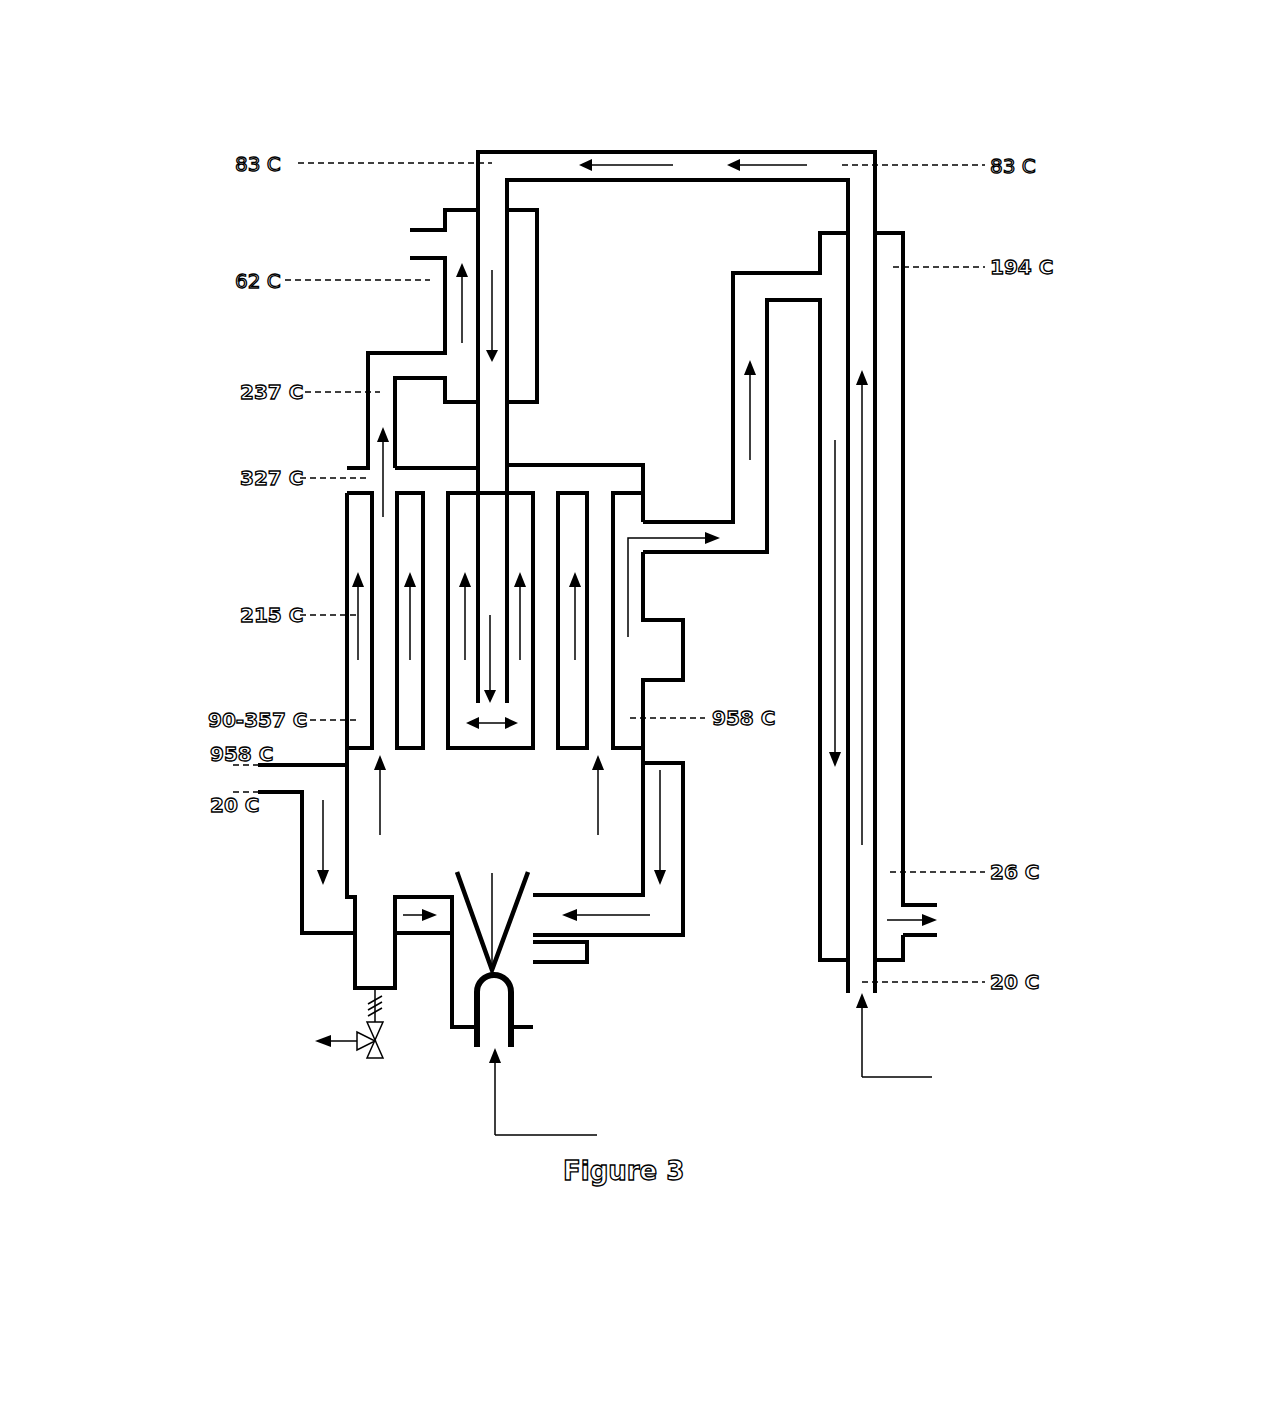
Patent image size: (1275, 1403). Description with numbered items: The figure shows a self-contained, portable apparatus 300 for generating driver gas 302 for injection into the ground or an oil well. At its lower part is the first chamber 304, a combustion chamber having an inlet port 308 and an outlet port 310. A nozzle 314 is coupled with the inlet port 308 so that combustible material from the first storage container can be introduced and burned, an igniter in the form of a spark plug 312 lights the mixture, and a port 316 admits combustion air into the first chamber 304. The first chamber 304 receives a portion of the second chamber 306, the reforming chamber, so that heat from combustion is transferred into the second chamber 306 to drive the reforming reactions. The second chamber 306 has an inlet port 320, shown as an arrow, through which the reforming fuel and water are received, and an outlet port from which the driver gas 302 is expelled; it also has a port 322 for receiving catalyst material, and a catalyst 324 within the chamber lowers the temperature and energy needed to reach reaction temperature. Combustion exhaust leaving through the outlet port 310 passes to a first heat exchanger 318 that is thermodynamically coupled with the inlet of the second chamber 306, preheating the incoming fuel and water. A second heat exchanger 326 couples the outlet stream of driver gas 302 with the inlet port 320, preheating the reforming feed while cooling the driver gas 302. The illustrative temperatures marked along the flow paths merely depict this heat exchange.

The apparatus 300 is at (393, 104).
The driver gas 302 is at (912, 905).
The first chamber 304 is at (483, 837).
The second chamber 306 is at (519, 513).
The inlet port 308 is at (498, 1100).
The outlet port 310 is at (431, 282).
The spark plug 312 is at (562, 957).
The nozzle 314 is at (485, 965).
The port 316 is at (282, 795).
The first heat exchanger 318 is at (517, 276).
The inlet port 320 is at (858, 1050).
The port 322 is at (665, 650).
The catalyst 324 is at (630, 598).
The second heat exchanger 326 is at (905, 495).